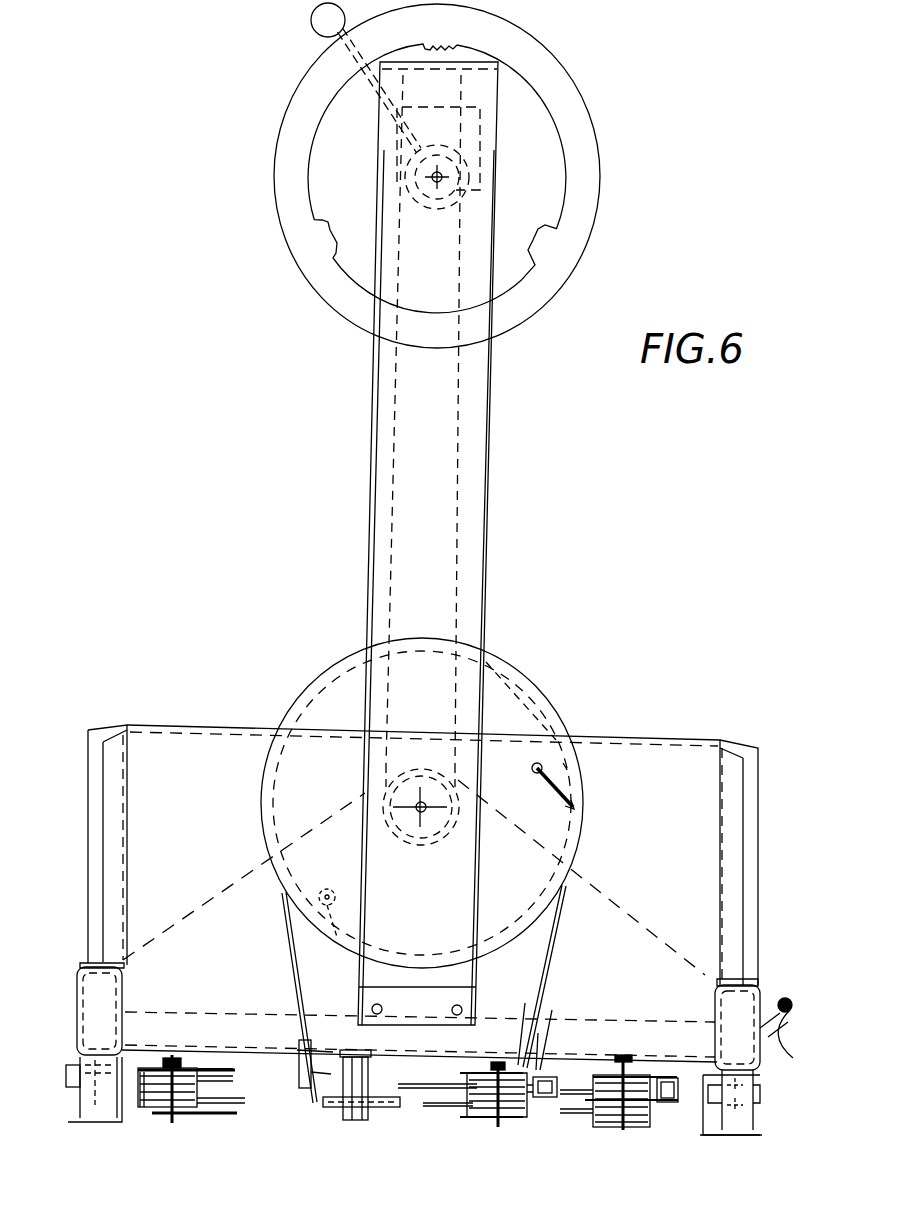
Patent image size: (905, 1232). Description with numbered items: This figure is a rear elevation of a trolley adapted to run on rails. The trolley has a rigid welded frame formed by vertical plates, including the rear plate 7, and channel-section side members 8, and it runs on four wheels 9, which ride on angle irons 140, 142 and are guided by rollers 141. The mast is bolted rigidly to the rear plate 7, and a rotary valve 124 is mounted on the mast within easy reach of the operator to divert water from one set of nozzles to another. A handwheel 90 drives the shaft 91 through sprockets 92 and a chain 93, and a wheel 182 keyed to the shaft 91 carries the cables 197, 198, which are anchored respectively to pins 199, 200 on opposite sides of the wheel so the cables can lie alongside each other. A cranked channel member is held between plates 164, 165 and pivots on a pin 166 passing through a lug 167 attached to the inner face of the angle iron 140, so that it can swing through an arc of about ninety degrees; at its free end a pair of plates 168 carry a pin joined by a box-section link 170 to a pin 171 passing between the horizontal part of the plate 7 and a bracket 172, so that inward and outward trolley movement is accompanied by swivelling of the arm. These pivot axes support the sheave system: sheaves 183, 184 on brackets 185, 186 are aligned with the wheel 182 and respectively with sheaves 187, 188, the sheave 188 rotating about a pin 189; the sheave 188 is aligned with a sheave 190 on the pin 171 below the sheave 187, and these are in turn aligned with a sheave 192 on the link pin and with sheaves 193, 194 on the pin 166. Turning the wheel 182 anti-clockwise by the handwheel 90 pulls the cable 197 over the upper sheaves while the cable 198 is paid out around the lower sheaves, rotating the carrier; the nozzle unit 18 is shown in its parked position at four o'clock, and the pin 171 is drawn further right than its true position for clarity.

The handwheel 90 is at (585, 198).
The sprockets 92 is at (431, 196).
The rotary valve 124 is at (473, 135).
The chain 93 is at (455, 467).
The wheel 182 is at (510, 702).
The shaft 91 is at (424, 822).
The pin 199 is at (537, 766).
The rear plate 7 is at (640, 753).
The bracket 186 is at (288, 1012).
The pin 200 is at (325, 890).
The cable 198 is at (292, 920).
The cable 197 is at (559, 923).
The side members 8 is at (82, 967).
The wheels 9 is at (92, 1003).
The nozzle unit 18 is at (787, 998).
The rollers 141 is at (68, 1086).
The angle iron 140 is at (118, 1122).
The lug 167 is at (157, 1063).
The sheave 194 is at (192, 1106).
The sheave 193 is at (146, 1072).
The pin 166 is at (173, 1056).
The plate 164 is at (204, 1068).
The plate 165 is at (237, 1113).
The sheave 184 is at (323, 1050).
The pin 189 is at (353, 1052).
The sheave 188 is at (340, 1107).
The bracket 185 is at (525, 1005).
The sheave 183 is at (558, 1025).
The sheave 192 is at (478, 1118).
The plates 168 is at (490, 1128).
The box-section link 170 is at (557, 1093).
The sheave 190 is at (600, 1120).
The pin 171 is at (625, 1057).
The sheave 187 is at (603, 1075).
The bracket 172 is at (630, 1123).
The angle iron 142 is at (705, 1135).